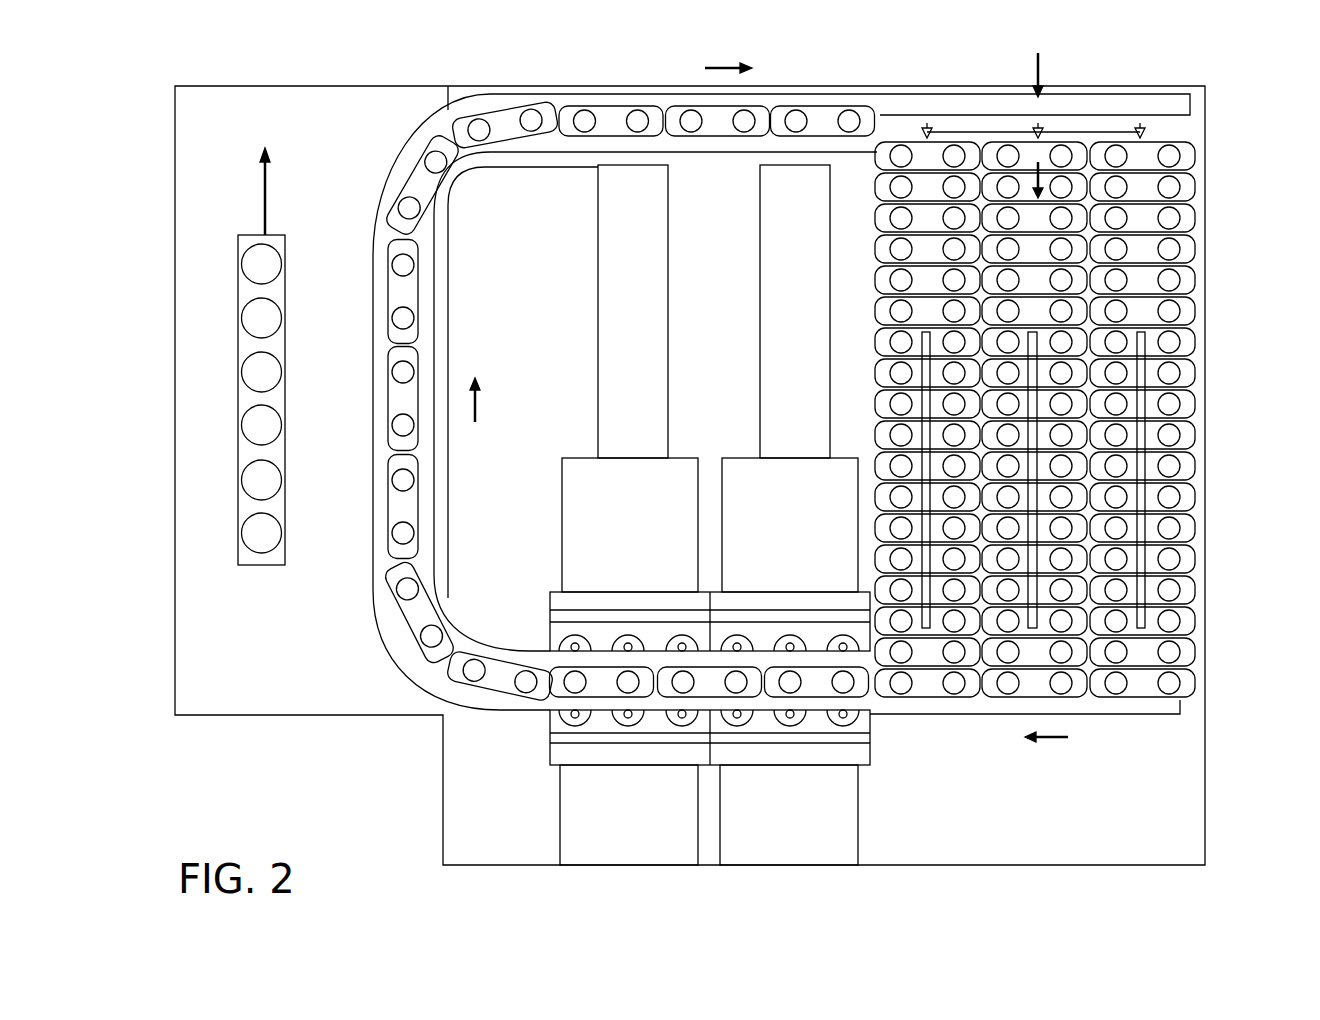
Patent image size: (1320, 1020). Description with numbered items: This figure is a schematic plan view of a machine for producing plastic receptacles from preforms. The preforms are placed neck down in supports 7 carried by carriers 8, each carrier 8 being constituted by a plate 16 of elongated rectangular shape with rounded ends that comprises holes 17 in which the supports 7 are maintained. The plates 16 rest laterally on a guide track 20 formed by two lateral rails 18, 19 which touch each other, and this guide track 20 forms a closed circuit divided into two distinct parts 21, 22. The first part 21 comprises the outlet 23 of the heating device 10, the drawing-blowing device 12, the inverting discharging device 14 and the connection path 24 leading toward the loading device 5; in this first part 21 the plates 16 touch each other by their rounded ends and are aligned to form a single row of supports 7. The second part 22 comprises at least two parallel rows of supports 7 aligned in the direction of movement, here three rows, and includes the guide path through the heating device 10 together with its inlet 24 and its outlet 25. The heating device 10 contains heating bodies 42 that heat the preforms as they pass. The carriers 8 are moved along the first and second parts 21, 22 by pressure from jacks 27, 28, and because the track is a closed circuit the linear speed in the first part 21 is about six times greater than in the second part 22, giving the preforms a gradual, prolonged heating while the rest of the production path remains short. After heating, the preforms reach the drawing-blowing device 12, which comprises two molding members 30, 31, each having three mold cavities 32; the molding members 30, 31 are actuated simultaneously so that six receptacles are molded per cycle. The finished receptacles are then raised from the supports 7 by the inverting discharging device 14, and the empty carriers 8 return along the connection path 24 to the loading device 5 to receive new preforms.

The loading device 5 is at (1006, 124).
The support 7 is at (1170, 154).
The carrier 8 is at (1200, 161).
The heating device 10 is at (1170, 420).
The drawing-blowing device 12 is at (538, 751).
The inverting discharging device 14 is at (330, 530).
The plate 16 is at (1150, 142).
The hole 17 is at (1147, 152).
The lateral rail 18 is at (440, 128).
The lateral rail 19 is at (463, 168).
The guide track 20 is at (526, 88).
The first part 21 is at (447, 698).
The second part 22 is at (1198, 311).
The outlet 23 is at (1085, 728).
The connection path 24 is at (477, 95).
The outlet 25 is at (1196, 633).
The jack 27 is at (1196, 683).
The jack 28 is at (927, 130).
The molding member 30 is at (627, 733).
The molding member 31 is at (788, 733).
The mold cavity 32 is at (742, 643).
The heating body 42 is at (1140, 465).